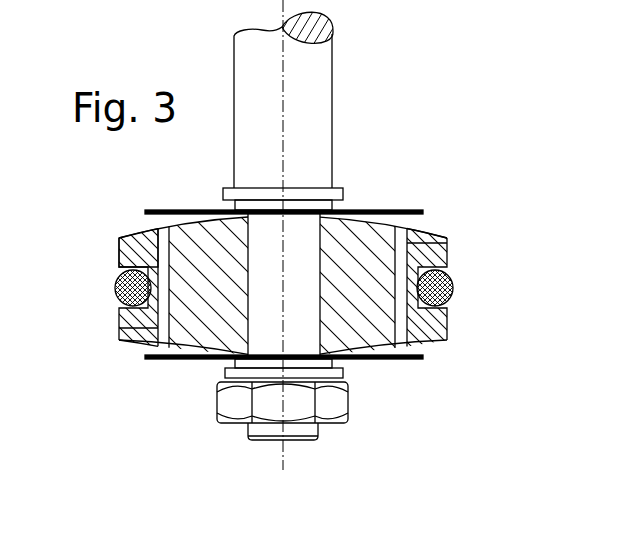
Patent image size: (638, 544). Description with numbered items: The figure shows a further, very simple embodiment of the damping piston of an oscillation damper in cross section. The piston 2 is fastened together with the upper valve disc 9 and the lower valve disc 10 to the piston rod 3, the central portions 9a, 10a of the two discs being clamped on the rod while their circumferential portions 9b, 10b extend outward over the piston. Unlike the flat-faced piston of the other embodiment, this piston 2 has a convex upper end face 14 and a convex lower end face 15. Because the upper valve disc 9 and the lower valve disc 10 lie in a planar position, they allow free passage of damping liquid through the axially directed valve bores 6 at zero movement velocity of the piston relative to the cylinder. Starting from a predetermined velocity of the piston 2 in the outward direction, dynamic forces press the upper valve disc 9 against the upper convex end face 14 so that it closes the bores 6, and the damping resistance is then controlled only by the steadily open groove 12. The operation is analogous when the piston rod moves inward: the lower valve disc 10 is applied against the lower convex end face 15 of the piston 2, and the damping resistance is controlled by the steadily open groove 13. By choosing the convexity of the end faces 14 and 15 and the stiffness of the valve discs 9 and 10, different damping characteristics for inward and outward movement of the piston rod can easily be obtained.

The piston 2 is at (433, 330).
The piston rod 3 is at (323, 135).
The valve bores 6 is at (163, 318).
The upper valve disc 9 is at (293, 176).
The central portion of the upper valve disc 9a is at (262, 200).
The circumferential portion of the upper valve disc 9b is at (377, 208).
The lower valve disc 10 is at (323, 407).
The central portion of the lower valve disc 10a is at (312, 362).
The circumferential portion of the lower valve disc 10b is at (172, 360).
The groove 12 is at (427, 237).
The groove 13 is at (140, 338).
The upper convex end face 14 is at (145, 228).
The lower convex end face 15 is at (422, 354).